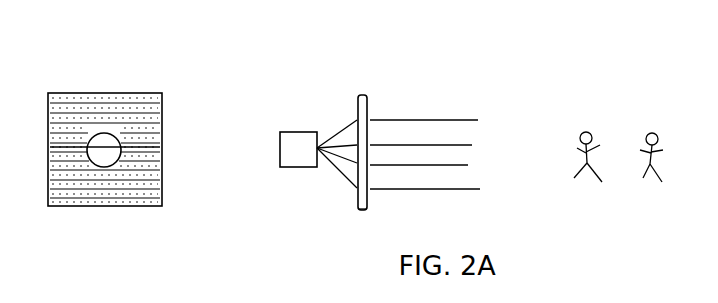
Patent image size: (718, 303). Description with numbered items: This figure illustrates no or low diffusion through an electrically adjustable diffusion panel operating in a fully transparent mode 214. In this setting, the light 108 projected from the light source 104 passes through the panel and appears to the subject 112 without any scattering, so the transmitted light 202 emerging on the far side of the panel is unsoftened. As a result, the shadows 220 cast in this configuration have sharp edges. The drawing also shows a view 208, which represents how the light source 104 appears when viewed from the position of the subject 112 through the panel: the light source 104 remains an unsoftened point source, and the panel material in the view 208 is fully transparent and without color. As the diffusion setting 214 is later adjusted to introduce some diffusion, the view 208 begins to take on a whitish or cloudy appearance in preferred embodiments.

The light source 104 is at (278, 119).
The light 108 is at (333, 130).
The subject 112 is at (582, 184).
The transmitted light 202 is at (425, 124).
The view 208 is at (143, 128).
The fully transparent mode 214 is at (326, 220).
The shadows 220 is at (663, 186).